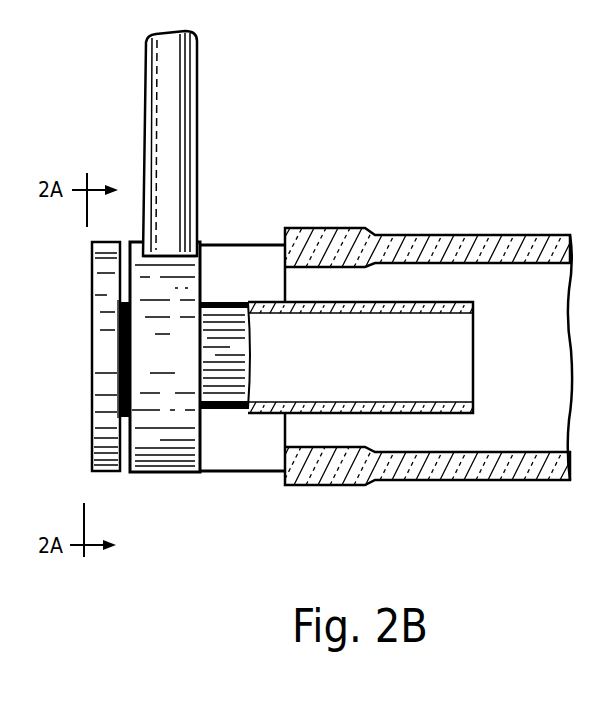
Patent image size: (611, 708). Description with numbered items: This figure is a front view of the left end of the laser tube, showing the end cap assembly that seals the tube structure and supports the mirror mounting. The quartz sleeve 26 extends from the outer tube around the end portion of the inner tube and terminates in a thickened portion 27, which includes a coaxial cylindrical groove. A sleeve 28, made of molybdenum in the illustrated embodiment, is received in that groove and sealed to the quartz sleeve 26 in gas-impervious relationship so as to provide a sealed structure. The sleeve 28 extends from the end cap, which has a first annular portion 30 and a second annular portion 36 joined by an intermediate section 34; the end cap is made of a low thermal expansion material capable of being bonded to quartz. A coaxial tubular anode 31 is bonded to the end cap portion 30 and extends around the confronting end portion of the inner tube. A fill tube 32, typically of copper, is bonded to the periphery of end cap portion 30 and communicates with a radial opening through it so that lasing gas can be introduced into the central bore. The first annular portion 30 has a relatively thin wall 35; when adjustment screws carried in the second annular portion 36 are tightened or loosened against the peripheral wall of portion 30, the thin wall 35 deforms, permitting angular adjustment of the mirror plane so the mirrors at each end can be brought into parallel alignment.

The quartz sleeve 26 is at (456, 482).
The thickened portion 27 is at (323, 487).
The sleeve 28 is at (247, 473).
The first annular portion 30 is at (162, 473).
The tubular anode 31 is at (455, 414).
The fill tube 32 is at (198, 147).
The intermediate section 34 is at (118, 416).
The thin wall 35 is at (125, 473).
The second annular portion 36 is at (103, 472).